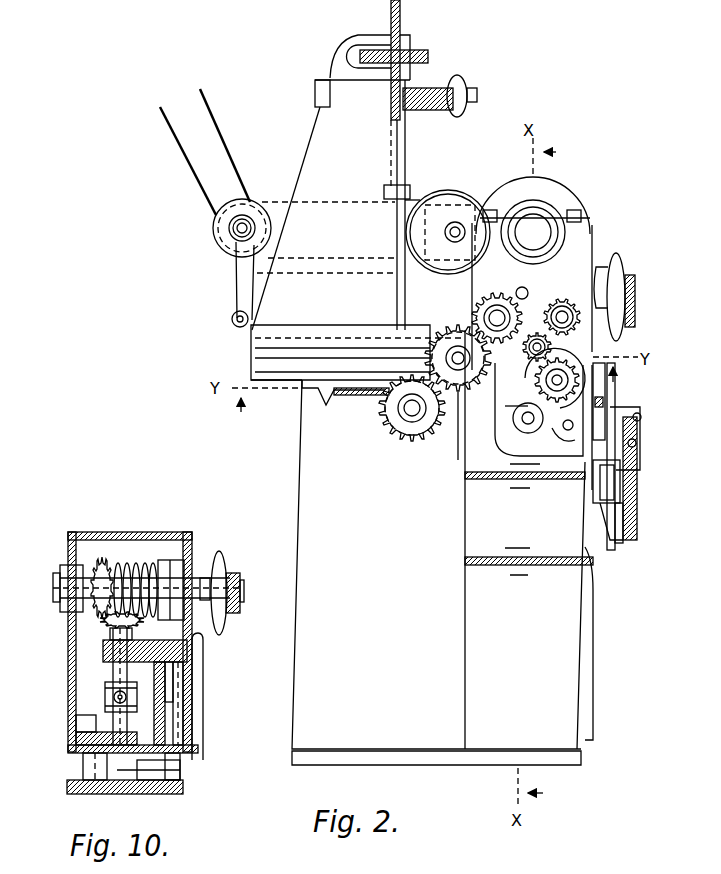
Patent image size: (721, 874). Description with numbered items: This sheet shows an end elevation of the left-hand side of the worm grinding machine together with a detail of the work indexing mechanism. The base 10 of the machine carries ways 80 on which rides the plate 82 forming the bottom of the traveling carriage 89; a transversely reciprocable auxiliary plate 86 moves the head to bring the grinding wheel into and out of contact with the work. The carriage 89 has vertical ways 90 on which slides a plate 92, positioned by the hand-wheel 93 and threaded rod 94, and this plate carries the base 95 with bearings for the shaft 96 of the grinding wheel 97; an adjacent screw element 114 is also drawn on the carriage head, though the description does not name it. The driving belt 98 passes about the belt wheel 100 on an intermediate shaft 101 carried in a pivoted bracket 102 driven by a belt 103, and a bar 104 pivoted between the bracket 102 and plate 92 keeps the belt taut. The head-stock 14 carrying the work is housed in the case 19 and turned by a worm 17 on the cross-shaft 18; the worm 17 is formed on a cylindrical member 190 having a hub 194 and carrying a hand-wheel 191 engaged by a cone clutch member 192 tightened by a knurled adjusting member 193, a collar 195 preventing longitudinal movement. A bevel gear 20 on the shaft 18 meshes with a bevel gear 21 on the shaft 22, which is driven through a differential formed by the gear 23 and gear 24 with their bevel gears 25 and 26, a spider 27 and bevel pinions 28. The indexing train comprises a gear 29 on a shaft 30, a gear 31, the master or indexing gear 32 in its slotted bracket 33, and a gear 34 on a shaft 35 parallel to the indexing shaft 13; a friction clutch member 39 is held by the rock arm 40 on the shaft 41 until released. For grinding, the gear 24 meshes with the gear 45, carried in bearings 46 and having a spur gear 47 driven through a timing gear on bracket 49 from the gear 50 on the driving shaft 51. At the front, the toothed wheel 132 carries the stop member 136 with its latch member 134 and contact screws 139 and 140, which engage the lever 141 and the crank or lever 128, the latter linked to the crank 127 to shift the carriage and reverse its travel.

In FIG. 2, the base 10 is at (442, 547).
In FIG. 2, the indexing shaft 13 is at (528, 433).
In FIG. 2, the head-stock 14 is at (575, 212).
In FIG. 10, the worm 17 is at (125, 563).
In FIG. 10, the cross-shaft 18 is at (58, 588).
In FIG. 2, the frame or case 19 is at (532, 273).
In FIG. 10, the frame or case 19 is at (160, 532).
In FIG. 10, the bevel gear 20 is at (72, 550).
In FIG. 10, the bevel gear 21 is at (80, 625).
In FIG. 10, the shaft 22 is at (103, 648).
In FIG. 10, the gear 23 is at (105, 655).
In FIG. 10, the gear 24 is at (76, 735).
In FIG. 10, the bevel gear 25 is at (105, 686).
In FIG. 10, the bevel gear 26 is at (105, 705).
In FIG. 10, the spider 27 is at (186, 695).
In FIG. 10, the bevel pinions 28 is at (168, 690).
In FIG. 10, the gear 29 is at (200, 648).
In FIG. 2, the shaft 30 is at (534, 288).
In FIG. 10, the shaft 30 is at (170, 668).
In FIG. 2, the gear 31 is at (560, 300).
In FIG. 10, the gear 31 is at (183, 788).
In FIG. 2, the master or indexing gear 32 is at (615, 350).
In FIG. 10, the master or indexing gear 32 is at (128, 795).
In FIG. 2, the bracket 33 is at (525, 352).
In FIG. 10, the bracket 33 is at (176, 772).
In FIG. 2, the gear 34 is at (535, 384).
In FIG. 2, the shaft 35 is at (530, 394).
In FIG. 2, the friction clutch member 39 is at (512, 410).
In FIG. 2, the rock arm 40 is at (561, 436).
In FIG. 2, the shaft 41 is at (562, 462).
In FIG. 10, the gear 45 is at (70, 748).
In FIG. 2, the bearings 46 is at (456, 320).
In FIG. 10, the bearings 46 is at (76, 723).
In FIG. 2, the spur gear 47 is at (492, 290).
In FIG. 10, the spur gear 47 is at (67, 787).
In FIG. 2, the bracket 49 is at (436, 330).
In FIG. 2, the gear 50 is at (404, 440).
In FIG. 2, the driving shaft 51 is at (400, 408).
In FIG. 2, the way 80 is at (303, 392).
In FIG. 2, the plate 82 is at (254, 372).
In FIG. 2, the auxiliary plate 86 is at (262, 352).
In FIG. 2, the traveling carriage 89 is at (358, 343).
In FIG. 2, the vertical way 90 is at (406, 121).
In FIG. 2, the plate 92 is at (408, 188).
In FIG. 2, the hand-wheel 93 is at (420, 55).
In FIG. 2, the threaded rod 94 is at (402, 10).
In FIG. 2, the base 95 is at (420, 180).
In FIG. 2, the shaft 96 is at (470, 210).
In FIG. 2, the grinding wheel 97 is at (450, 222).
In FIG. 2, the driving belt 98 is at (285, 200).
In FIG. 2, the belt wheel 100 is at (215, 232).
In FIG. 2, the intermediate shaft 101 is at (225, 242).
In FIG. 2, the bracket 102 is at (240, 277).
In FIG. 2, the belt 103 is at (205, 152).
In FIG. 2, the bar 104 is at (300, 285).
In FIG. 2, the screw 114 is at (465, 82).
In FIG. 2, the crank 127 is at (605, 497).
In FIG. 2, the crank or lever 128 is at (617, 520).
In FIG. 2, the toothed wheel 132 is at (645, 525).
In FIG. 2, the latch member 134 is at (648, 460).
In FIG. 2, the stop member 136 is at (622, 412).
In FIG. 2, the adjustable contact screw 139 is at (648, 417).
In FIG. 2, the adjustable contact screw 140 is at (648, 443).
In FIG. 2, the lever 141 is at (612, 398).
In FIG. 10, the cylindrical member 190 is at (168, 578).
In FIG. 10, the hand-wheel 191 is at (226, 560).
In FIG. 10, the cone clutch member 192 is at (228, 574).
In FIG. 10, the knurled adjusting member 193 is at (242, 584).
In FIG. 10, the hub 194 is at (172, 606).
In FIG. 10, the collar 195 is at (97, 568).